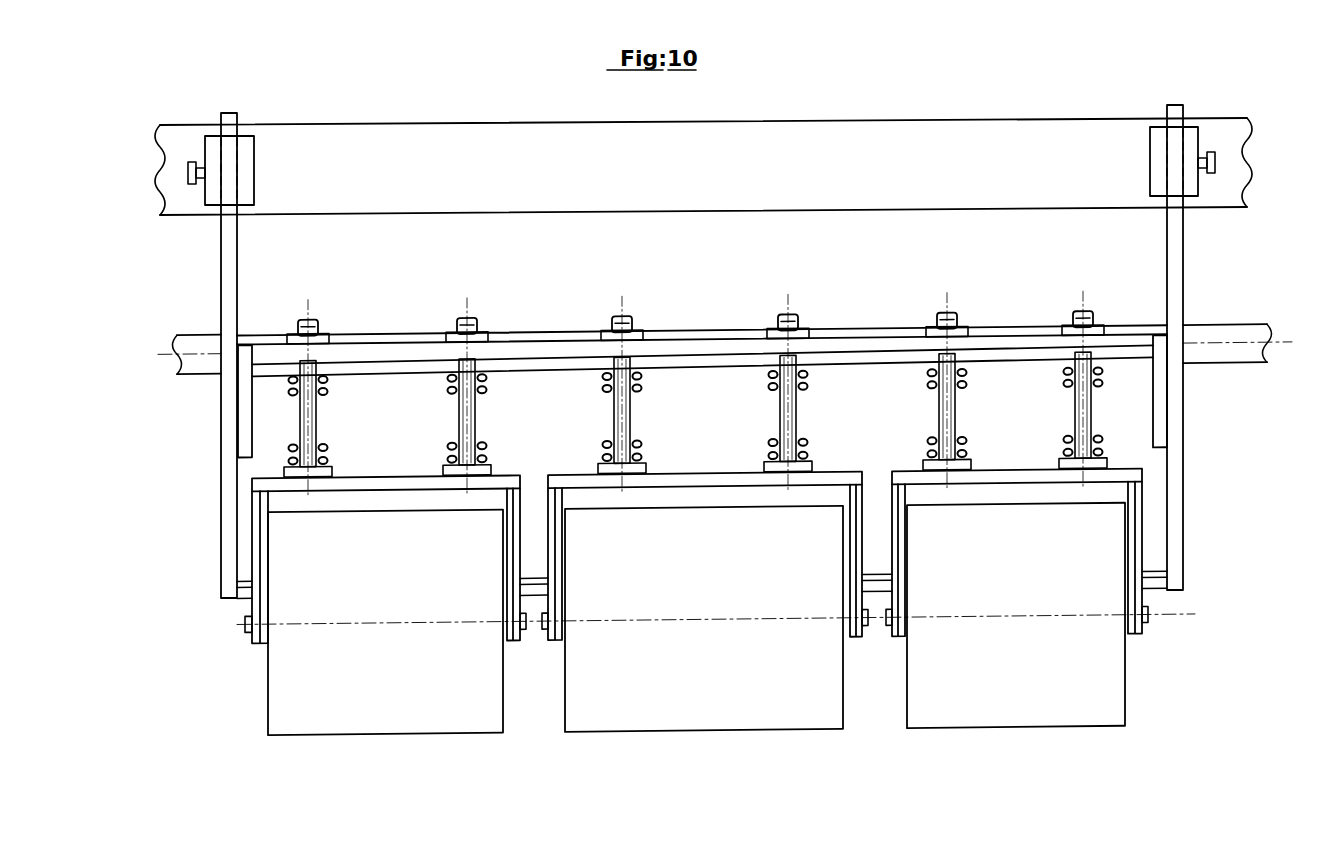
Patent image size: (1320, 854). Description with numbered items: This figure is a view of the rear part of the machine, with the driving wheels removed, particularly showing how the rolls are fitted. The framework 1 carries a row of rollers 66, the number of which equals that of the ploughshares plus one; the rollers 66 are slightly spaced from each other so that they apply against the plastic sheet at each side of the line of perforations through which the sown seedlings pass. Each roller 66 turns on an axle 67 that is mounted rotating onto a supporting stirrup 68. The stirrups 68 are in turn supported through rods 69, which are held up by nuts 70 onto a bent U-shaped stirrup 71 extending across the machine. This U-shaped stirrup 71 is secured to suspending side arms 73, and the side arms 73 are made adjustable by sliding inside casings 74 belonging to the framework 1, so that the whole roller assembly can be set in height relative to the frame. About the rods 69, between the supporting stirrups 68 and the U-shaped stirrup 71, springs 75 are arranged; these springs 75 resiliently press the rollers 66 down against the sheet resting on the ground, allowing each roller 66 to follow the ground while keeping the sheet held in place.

The frame 1 is at (1047, 137).
The rollers 66 is at (1110, 676).
The axles 67 is at (545, 636).
The supporting stirrups 68 is at (893, 636).
The rods 69 is at (950, 415).
The nuts 70 is at (1098, 325).
The bent U-shaped stirrup 71 is at (1162, 395).
The suspending side arms 73 is at (1177, 237).
The casings 74 is at (1188, 140).
The springs 75 is at (930, 390).